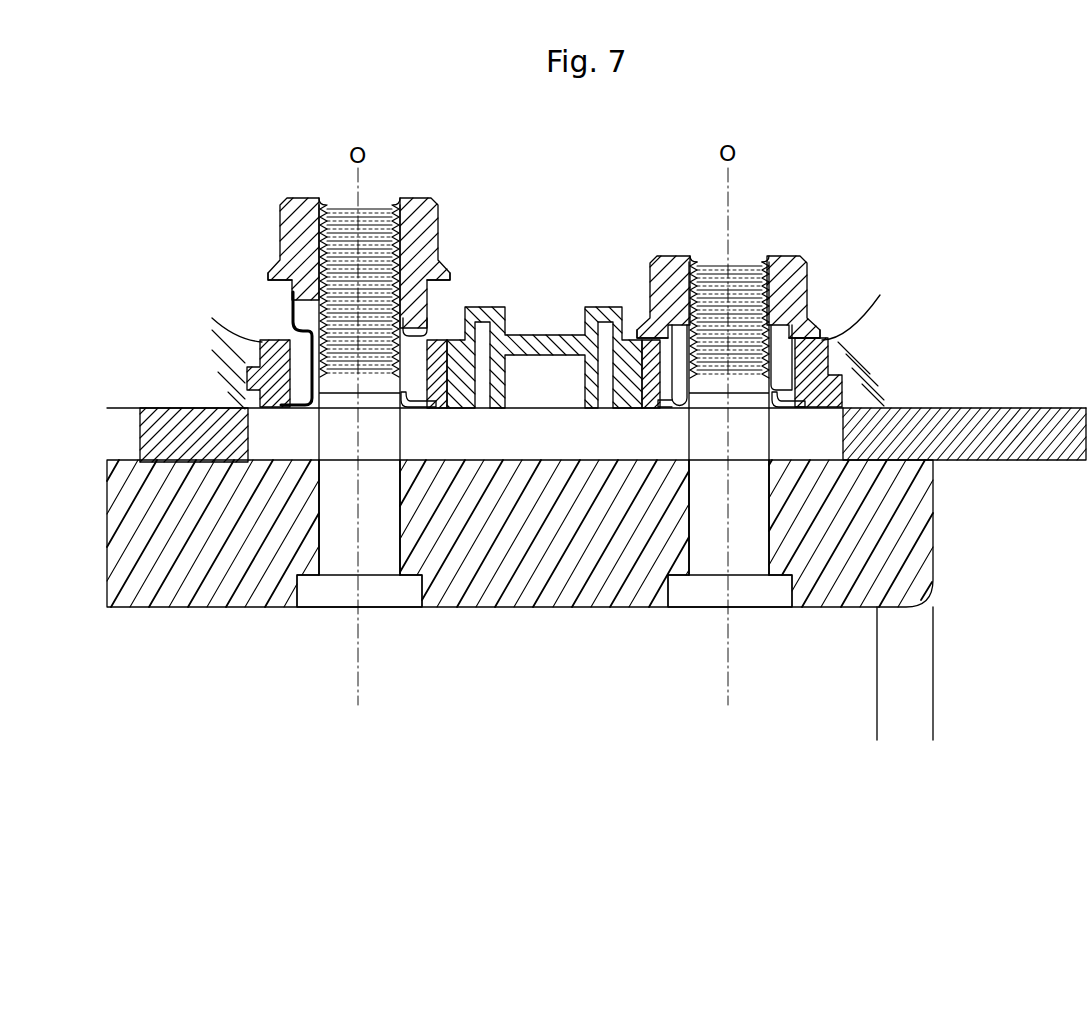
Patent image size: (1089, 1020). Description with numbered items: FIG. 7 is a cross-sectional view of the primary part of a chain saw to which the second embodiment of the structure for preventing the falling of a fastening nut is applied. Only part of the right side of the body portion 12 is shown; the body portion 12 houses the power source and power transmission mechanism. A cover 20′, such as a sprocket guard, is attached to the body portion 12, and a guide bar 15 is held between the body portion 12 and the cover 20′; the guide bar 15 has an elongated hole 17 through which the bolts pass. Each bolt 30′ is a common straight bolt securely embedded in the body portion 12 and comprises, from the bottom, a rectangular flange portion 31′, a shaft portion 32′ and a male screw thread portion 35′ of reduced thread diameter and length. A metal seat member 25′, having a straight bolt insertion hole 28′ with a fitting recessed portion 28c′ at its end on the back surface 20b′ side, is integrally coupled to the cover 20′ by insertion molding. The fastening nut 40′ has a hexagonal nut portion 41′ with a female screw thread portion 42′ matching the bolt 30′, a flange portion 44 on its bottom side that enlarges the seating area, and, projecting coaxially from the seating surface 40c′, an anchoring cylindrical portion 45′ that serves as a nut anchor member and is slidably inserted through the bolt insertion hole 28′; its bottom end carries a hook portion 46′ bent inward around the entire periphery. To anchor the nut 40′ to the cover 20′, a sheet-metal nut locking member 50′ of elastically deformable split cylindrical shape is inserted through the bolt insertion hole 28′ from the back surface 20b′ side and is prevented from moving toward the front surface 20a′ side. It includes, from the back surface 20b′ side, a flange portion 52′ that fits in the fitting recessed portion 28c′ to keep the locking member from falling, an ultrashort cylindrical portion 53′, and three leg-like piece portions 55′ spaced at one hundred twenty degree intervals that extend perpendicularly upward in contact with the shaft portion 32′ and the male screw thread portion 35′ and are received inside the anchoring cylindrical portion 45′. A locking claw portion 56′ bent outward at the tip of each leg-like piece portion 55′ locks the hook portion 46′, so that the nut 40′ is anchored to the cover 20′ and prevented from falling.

The body portion 12 is at (936, 520).
The guide bar 15 is at (1000, 407).
The elongated hole 17 is at (836, 448).
The cover 20′ is at (533, 333).
The front surface 20a′ is at (545, 345).
The back surface 20b′ is at (500, 410).
The seat member 25′ is at (250, 409).
The bolt insertion hole 28′ is at (462, 358).
The fitting recessed portion 28c′ is at (435, 410).
The bolt 30′ is at (317, 520).
The rectangular flange portion 31′ is at (382, 609).
The shaft portion 32′ is at (386, 502).
The male screw thread portion 35′ is at (400, 283).
The nut 40′ is at (422, 196).
The hexagonal nut portion 41′ is at (543, 227).
The seating surface 40c′ is at (290, 293).
The female screw thread portion 42′ is at (338, 207).
The flange portion 44 is at (272, 268).
The anchoring cylindrical portion 45′ is at (410, 328).
The hook portion 46′ is at (263, 364).
The nut locking member 50′ is at (258, 378).
The leg-like piece portions 55′ is at (544, 339).
The flange portion 52′ is at (413, 410).
The ultrashort cylindrical portion 53′ is at (476, 395).
The locking claw portion 56′ is at (300, 336).